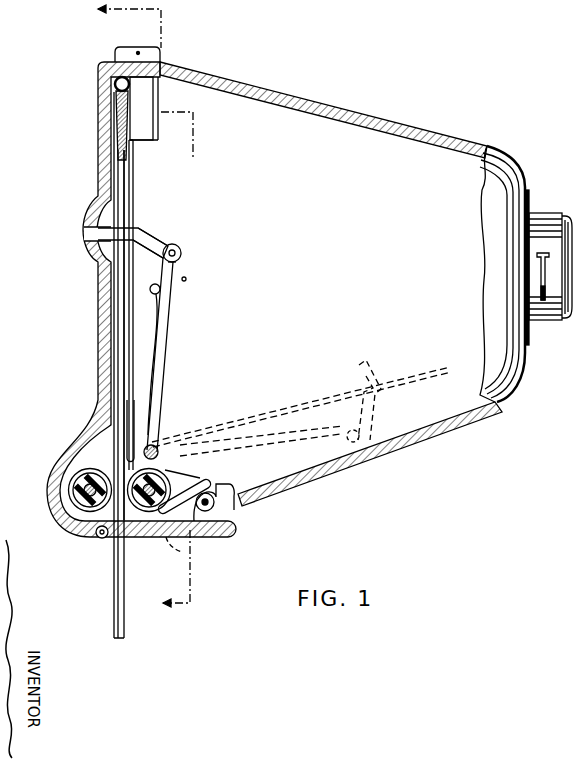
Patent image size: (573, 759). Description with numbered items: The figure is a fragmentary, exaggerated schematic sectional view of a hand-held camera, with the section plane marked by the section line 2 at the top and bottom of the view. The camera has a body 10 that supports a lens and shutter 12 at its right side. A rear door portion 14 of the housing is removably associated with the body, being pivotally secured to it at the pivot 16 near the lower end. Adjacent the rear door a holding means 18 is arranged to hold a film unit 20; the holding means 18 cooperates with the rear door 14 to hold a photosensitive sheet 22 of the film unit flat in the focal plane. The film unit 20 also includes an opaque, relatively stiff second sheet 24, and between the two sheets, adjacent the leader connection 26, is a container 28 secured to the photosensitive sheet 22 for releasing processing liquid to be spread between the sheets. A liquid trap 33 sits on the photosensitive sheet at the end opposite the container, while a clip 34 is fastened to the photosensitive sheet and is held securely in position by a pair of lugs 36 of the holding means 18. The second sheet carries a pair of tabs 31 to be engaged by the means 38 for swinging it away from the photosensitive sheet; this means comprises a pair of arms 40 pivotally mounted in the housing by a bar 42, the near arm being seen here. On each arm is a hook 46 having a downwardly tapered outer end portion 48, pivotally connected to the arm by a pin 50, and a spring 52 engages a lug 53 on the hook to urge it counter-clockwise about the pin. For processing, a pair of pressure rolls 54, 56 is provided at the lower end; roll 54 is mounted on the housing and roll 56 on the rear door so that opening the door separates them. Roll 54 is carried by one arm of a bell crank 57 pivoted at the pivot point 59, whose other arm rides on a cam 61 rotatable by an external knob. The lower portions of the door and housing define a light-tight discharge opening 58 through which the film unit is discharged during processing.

The section line 2- 2 is at (136, 306).
The camera body 10 is at (358, 109).
The lens and shutter 12 is at (541, 322).
The rear door portion 14 is at (106, 318).
The pivot 16 is at (98, 537).
The holding means 18 is at (148, 80).
The film unit 20 is at (140, 188).
The photosensitive sheet 22 is at (125, 292).
The second sheet 24 is at (133, 160).
The leader connection 26 is at (130, 525).
The container 28 is at (127, 435).
The tabs 31 is at (153, 243).
The liquid trap 33 is at (118, 155).
The clip 34 is at (117, 97).
The lugs 36 is at (147, 143).
The means for engaging and swinging the second sheet 38 is at (187, 268).
The arms 40 is at (168, 322).
The bar 42 is at (156, 443).
The hook 46 is at (140, 230).
The downwardly tapered outer end portion 48 is at (100, 242).
The pin 50 is at (183, 251).
The spring 52 is at (161, 293).
The lug 53 is at (187, 278).
The pressure roll 54 is at (183, 487).
The pressure roll 56 is at (75, 470).
The bell crank 57 is at (190, 485).
The light-tight discharge opening 58 is at (110, 550).
The pivot point 59 is at (182, 552).
The cam 61 is at (238, 507).